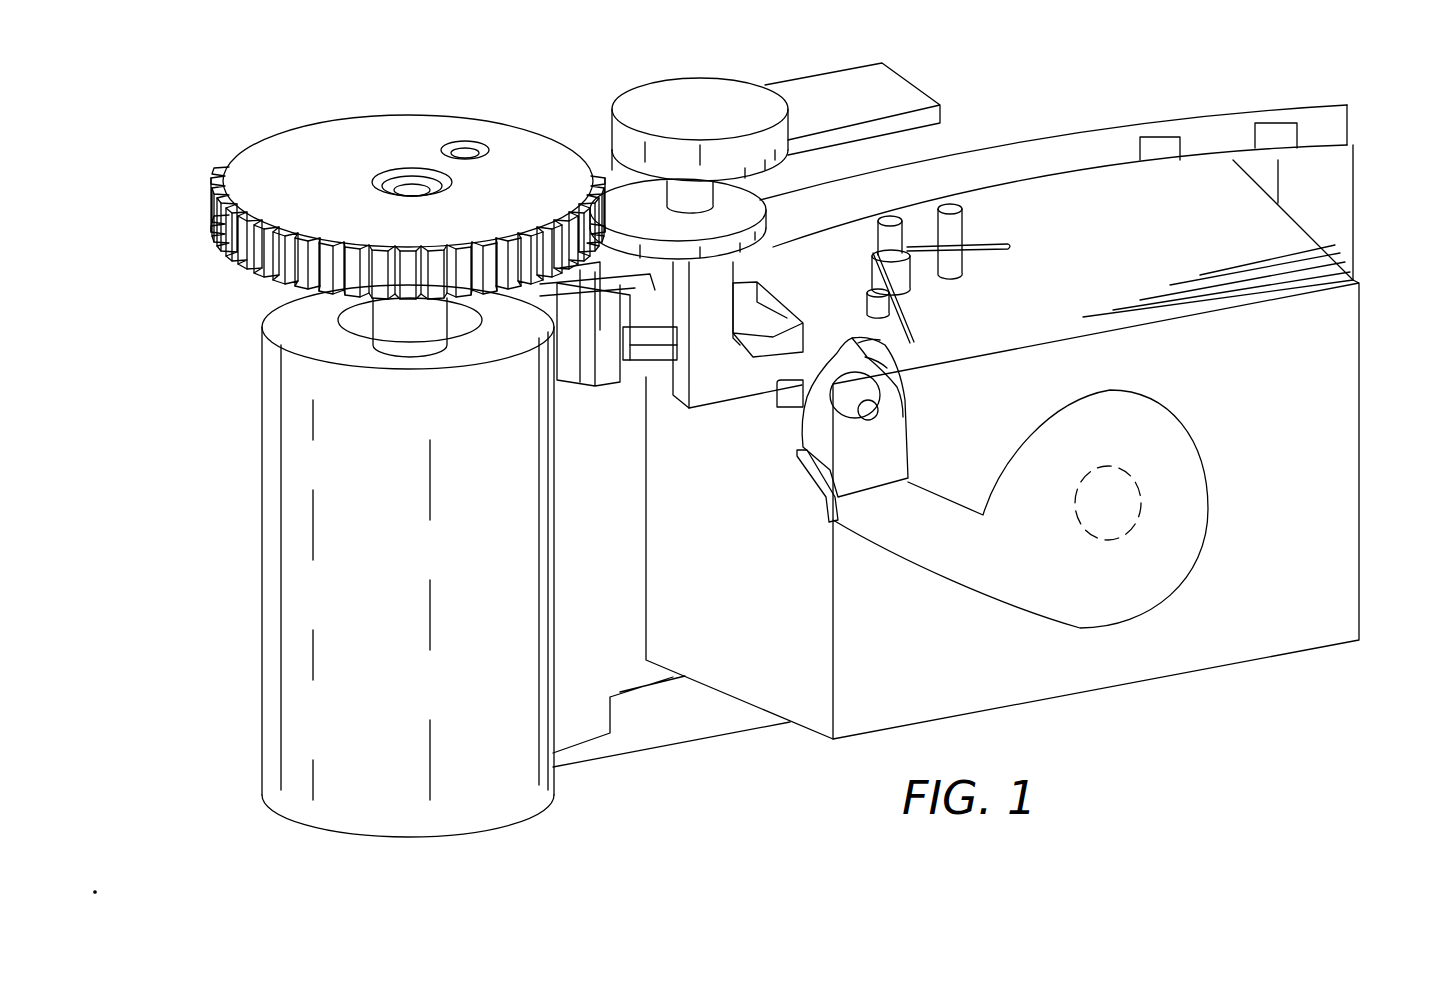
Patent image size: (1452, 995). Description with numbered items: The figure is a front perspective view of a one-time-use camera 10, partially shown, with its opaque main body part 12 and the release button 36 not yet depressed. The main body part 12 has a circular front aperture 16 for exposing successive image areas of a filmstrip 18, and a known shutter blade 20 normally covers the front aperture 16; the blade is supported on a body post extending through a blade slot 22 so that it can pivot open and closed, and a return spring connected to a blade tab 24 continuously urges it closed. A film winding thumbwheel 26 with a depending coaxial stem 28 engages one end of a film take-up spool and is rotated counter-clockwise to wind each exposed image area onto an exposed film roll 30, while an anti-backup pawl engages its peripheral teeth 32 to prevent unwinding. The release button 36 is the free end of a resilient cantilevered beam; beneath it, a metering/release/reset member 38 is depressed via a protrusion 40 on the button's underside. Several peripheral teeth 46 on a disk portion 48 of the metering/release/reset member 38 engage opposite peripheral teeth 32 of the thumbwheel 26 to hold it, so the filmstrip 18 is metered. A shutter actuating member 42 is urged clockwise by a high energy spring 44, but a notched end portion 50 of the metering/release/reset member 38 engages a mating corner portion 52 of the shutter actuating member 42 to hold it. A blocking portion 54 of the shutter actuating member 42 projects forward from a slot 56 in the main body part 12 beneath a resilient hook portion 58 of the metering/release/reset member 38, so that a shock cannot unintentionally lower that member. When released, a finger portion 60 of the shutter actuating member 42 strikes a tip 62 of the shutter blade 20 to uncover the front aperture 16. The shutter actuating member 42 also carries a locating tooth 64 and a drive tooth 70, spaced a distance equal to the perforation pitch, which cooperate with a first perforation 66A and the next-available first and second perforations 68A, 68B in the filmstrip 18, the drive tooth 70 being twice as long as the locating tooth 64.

The one-time-use camera 10 is at (262, 470).
The main body part 12 is at (1340, 395).
The front aperture 16 is at (1133, 522).
The filmstrip 18 is at (1093, 135).
The shutter blade 20 is at (1180, 415).
The blade slot 22 is at (905, 428).
The blade tab 24 is at (855, 70).
The film winding thumbwheel 26 is at (320, 147).
The coaxial stem 28 is at (397, 315).
The exposed film roll 30 is at (293, 632).
The peripheral teeth 32 is at (216, 204).
The release button 36 is at (728, 87).
The metering/release/reset member 38 is at (689, 412).
The protrusion 40 is at (682, 190).
The shutter actuating member 42 is at (803, 248).
The high energy spring 44 is at (903, 297).
The peripheral teeth 46 is at (593, 200).
The disk portion 48 is at (627, 188).
The notched end portion 50 is at (777, 393).
The mating corner portion 52 is at (818, 333).
The blocking portion 54 is at (633, 350).
The slot 56 is at (657, 343).
The resilient hook portion 58 is at (650, 302).
The finger portion 60 is at (860, 343).
The tip 62 is at (867, 357).
The locating tooth 64 is at (654, 299).
The first perforation 66A is at (553, 302).
The first perforation 68A is at (1163, 140).
The second perforation 68B is at (1278, 128).
The drive tooth 70 is at (737, 253).